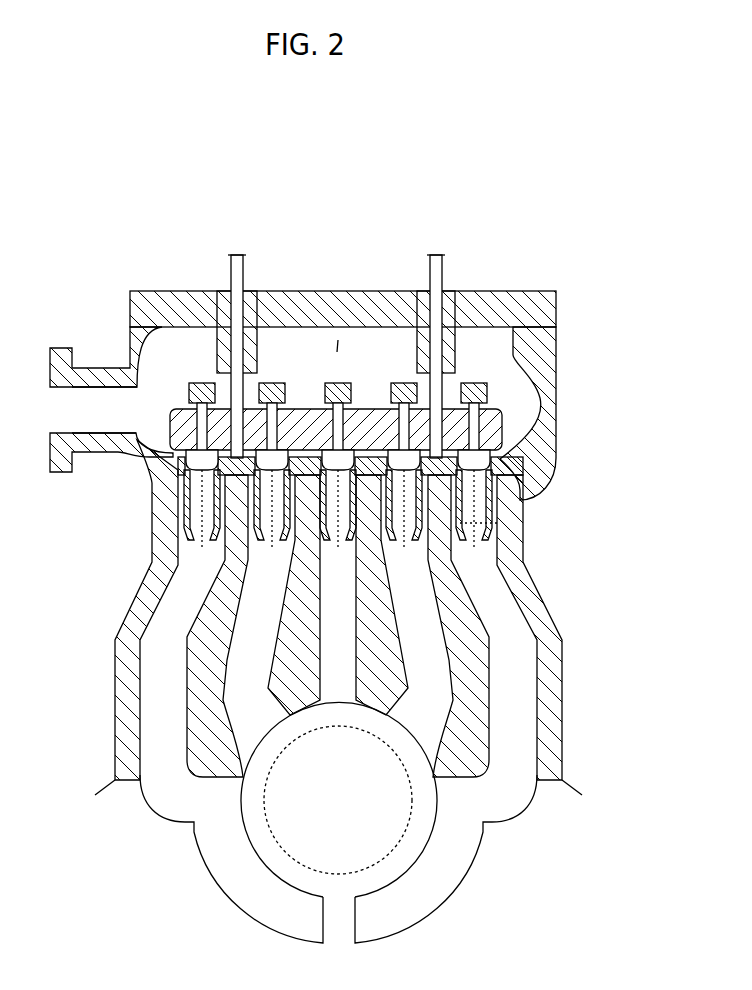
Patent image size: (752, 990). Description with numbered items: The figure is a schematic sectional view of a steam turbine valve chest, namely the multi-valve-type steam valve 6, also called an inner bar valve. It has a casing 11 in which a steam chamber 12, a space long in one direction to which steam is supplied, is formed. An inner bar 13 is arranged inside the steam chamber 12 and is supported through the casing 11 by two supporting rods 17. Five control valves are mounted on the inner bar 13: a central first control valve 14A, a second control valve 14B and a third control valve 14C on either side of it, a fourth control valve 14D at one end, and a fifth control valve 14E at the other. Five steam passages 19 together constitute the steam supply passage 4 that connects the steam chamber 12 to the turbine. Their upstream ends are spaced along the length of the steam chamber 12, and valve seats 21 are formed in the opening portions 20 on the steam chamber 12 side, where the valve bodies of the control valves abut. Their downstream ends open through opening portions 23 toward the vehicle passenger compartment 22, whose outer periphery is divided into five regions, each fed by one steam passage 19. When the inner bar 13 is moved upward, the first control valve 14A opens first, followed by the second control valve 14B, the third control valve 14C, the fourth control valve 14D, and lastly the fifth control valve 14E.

The steam supply passage 4 is at (112, 608).
The multi-valve-type steam valve 6 is at (513, 247).
The casing 11 is at (540, 372).
The steam chamber 12 is at (335, 352).
The inner bar 13 is at (158, 440).
The first control valve 14A is at (336, 520).
The second control valve 14B is at (272, 520).
The third control valve 14C is at (402, 518).
The fourth control valve 14D is at (201, 520).
The fifth control valve 14E is at (494, 468).
The supporting rod 17 is at (244, 272).
The steam passage 19 is at (247, 633).
The opening portion 20 is at (337, 455).
The valve seat 21 is at (498, 525).
The vehicle passenger compartment 22 is at (373, 851).
The opening portion 23 is at (338, 700).